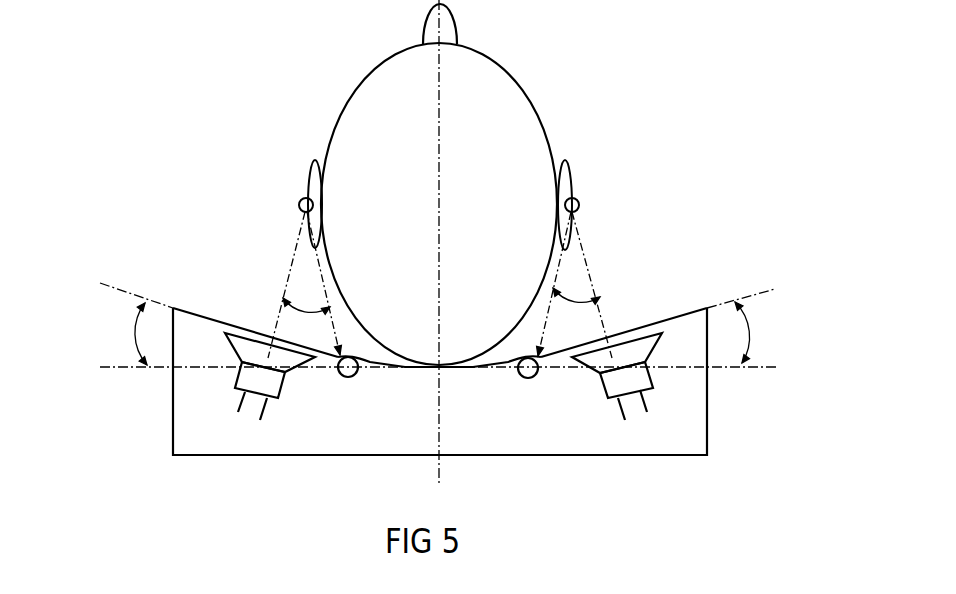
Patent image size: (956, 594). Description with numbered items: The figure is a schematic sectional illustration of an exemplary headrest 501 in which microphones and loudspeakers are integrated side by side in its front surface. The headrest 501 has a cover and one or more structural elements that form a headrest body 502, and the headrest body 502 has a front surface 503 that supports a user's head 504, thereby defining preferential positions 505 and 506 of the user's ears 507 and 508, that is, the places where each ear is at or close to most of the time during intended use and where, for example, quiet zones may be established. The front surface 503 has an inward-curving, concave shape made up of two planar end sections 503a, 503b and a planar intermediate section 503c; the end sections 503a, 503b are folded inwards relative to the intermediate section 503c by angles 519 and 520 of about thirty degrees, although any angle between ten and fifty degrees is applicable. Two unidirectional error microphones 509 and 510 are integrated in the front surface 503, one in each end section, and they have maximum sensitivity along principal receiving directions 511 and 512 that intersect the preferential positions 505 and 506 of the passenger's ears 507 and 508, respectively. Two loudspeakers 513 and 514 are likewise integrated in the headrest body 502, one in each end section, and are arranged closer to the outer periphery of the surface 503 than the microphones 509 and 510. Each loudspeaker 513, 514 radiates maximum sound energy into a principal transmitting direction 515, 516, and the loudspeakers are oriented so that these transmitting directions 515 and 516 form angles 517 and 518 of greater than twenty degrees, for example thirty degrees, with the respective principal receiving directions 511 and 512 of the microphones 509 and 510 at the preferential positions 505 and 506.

The headrest 501 is at (156, 437).
The headrest body 502 is at (698, 433).
The front surface 503 is at (400, 371).
The planar end section 503a is at (191, 309).
The planar end section 503b is at (688, 300).
The planar intermediate section 503c is at (384, 358).
The user's head 504 is at (505, 87).
The preferential position 505 is at (299, 205).
The preferential position 506 is at (580, 207).
The user's ear 507 is at (310, 167).
The user's ear 508 is at (573, 170).
The unidirectional microphone 509 is at (339, 376).
The unidirectional microphone 510 is at (518, 378).
The principal receiving direction 511 is at (333, 325).
The principal receiving direction 512 is at (543, 337).
The loudspeaker 513 is at (241, 343).
The loudspeaker 514 is at (597, 372).
The principal transmitting direction 515 is at (287, 275).
The principal transmitting direction 516 is at (595, 272).
The angle 517 is at (306, 295).
The angle 518 is at (576, 286).
The angle 519 is at (135, 340).
The angle 520 is at (753, 325).